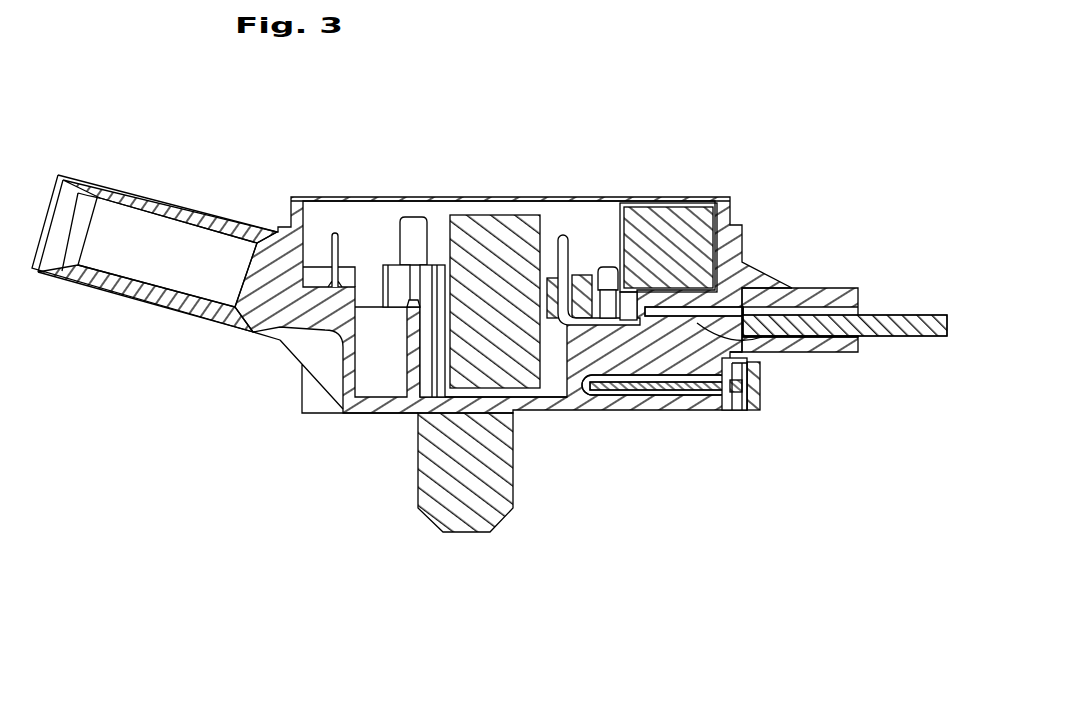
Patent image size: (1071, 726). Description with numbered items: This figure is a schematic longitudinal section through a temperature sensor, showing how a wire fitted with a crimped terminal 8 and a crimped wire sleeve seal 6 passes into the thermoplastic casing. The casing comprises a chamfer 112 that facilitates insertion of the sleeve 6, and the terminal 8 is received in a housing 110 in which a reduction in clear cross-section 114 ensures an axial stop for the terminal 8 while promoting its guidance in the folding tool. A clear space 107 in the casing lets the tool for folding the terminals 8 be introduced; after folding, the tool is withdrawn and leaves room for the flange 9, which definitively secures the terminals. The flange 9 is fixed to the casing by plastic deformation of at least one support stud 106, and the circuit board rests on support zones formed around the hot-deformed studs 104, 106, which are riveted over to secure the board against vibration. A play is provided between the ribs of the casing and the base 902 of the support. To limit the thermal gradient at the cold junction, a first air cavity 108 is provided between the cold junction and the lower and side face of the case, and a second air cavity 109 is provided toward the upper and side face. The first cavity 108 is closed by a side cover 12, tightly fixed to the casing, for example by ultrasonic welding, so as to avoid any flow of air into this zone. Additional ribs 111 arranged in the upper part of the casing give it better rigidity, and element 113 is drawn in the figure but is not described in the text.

The wire sleeve seal 6 is at (818, 292).
The terminal 8 is at (548, 250).
The flange 9 is at (583, 272).
The side cover 12 is at (762, 397).
The stud 104 is at (408, 235).
The support stud 106 is at (607, 267).
The clear space 107 is at (483, 357).
The air cavity 108 is at (697, 395).
The second air cavity 109 is at (665, 222).
The housing 110 is at (827, 340).
The additional rib 111 is at (763, 279).
The chamfer 112 is at (862, 303).
The channel 113 is at (636, 333).
The reduction in clear cross-section 114 is at (437, 487).
The base 902 is at (671, 332).